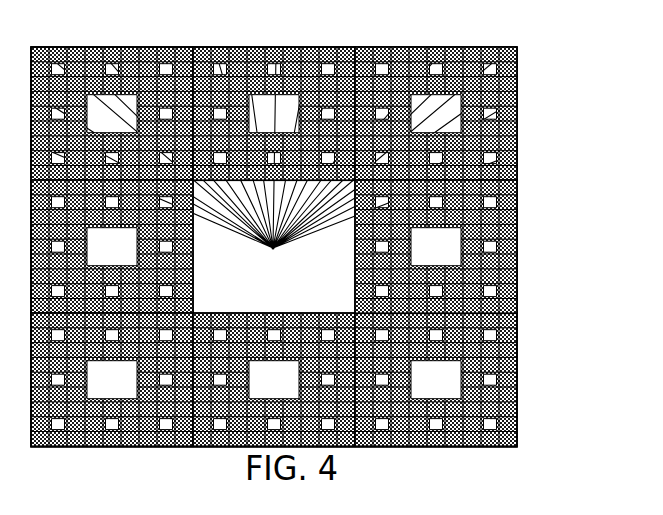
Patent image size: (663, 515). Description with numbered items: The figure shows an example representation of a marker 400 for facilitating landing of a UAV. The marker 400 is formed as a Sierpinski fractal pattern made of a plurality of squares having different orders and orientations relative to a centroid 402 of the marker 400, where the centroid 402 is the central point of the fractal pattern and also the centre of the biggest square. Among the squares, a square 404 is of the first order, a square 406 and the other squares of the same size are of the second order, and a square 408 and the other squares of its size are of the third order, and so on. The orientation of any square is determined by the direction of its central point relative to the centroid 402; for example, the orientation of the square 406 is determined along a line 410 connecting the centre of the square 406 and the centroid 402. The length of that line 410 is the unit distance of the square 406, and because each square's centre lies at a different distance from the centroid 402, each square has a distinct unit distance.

The marker 400 is at (444, 45).
The centroid 402 is at (274, 252).
The square 404 is at (252, 301).
The square 406 is at (516, 146).
The square 408 is at (516, 213).
The line 410 is at (328, 229).